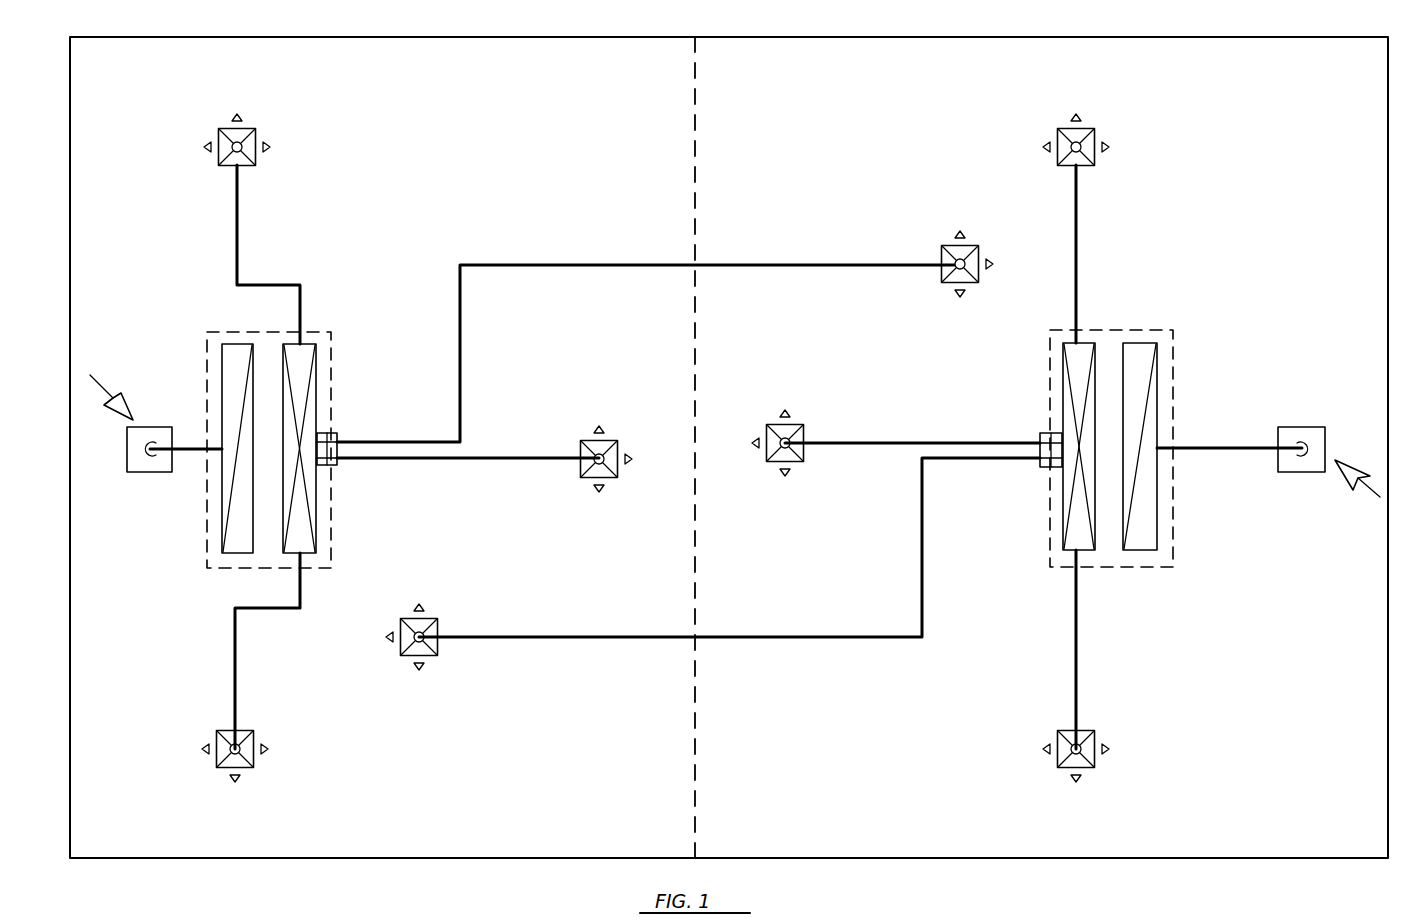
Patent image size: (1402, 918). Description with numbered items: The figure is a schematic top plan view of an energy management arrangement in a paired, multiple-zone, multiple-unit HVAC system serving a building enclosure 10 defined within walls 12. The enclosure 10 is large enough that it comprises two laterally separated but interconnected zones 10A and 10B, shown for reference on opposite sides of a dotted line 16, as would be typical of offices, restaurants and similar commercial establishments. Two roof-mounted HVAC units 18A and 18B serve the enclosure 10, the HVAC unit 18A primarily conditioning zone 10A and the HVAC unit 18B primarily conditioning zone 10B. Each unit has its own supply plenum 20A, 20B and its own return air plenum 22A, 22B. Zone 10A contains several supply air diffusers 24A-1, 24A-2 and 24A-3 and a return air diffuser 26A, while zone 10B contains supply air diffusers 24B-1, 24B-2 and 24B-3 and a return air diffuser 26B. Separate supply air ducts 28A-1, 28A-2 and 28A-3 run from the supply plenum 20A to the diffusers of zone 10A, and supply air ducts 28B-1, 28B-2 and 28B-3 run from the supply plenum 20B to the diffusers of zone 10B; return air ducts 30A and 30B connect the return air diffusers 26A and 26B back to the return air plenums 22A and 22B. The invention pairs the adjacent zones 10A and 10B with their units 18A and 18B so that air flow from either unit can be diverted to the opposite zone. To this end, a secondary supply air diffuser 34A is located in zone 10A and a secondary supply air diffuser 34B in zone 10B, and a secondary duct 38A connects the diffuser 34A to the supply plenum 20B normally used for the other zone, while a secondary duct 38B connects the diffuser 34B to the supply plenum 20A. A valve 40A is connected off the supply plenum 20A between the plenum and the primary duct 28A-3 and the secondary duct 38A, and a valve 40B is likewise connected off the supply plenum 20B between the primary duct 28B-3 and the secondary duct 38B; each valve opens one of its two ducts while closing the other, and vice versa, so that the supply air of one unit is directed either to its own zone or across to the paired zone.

The building enclosure 10 is at (905, 859).
The zone 10A is at (585, 769).
The zone 10B is at (903, 769).
The walls 12 is at (638, 36).
The dotted line 16 is at (697, 714).
The HVAC unit 18A is at (333, 548).
The HVAC unit 18B is at (1050, 572).
The supply plenum 20A is at (310, 355).
The supply plenum 20B is at (1068, 355).
The return air plenum 22A is at (247, 350).
The return air plenum 22B is at (1150, 350).
The supply air diffuser 24A-1 is at (245, 135).
The supply air diffuser 24A-2 is at (256, 762).
The supply air diffuser 24A-3 is at (588, 440).
The supply air diffuser 24B-1 is at (1097, 135).
The supply air diffuser 24B-2 is at (1095, 745).
The supply air diffuser 24B-3 is at (770, 425).
The return air diffuser 26A is at (155, 425).
The return air diffuser 26B is at (1290, 425).
The supply air duct 28A-1 is at (243, 242).
The supply air duct 28A-2 is at (240, 698).
The supply air duct 28A-3 is at (483, 462).
The supply air duct 28B-1 is at (1082, 242).
The supply air duct 28B-2 is at (1082, 660).
The supply air duct 28B-3 is at (905, 440).
The return air duct 30A is at (188, 452).
The return air duct 30B is at (1222, 452).
The secondary supply air diffuser 34A is at (440, 652).
The secondary supply air diffuser 34B is at (960, 245).
The secondary duct 38A is at (462, 335).
The secondary duct 38B is at (823, 635).
The valve 40A is at (337, 435).
The valve 40B is at (1045, 468).